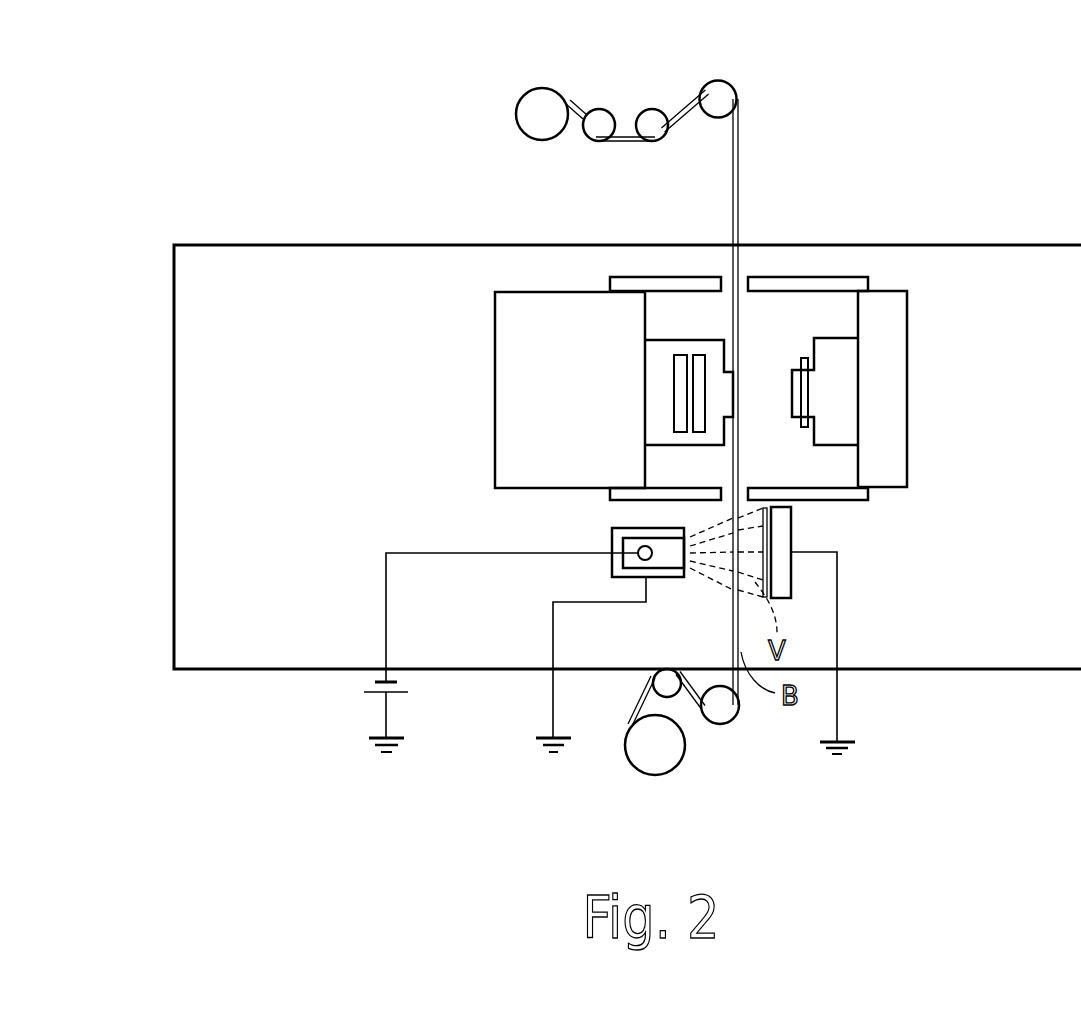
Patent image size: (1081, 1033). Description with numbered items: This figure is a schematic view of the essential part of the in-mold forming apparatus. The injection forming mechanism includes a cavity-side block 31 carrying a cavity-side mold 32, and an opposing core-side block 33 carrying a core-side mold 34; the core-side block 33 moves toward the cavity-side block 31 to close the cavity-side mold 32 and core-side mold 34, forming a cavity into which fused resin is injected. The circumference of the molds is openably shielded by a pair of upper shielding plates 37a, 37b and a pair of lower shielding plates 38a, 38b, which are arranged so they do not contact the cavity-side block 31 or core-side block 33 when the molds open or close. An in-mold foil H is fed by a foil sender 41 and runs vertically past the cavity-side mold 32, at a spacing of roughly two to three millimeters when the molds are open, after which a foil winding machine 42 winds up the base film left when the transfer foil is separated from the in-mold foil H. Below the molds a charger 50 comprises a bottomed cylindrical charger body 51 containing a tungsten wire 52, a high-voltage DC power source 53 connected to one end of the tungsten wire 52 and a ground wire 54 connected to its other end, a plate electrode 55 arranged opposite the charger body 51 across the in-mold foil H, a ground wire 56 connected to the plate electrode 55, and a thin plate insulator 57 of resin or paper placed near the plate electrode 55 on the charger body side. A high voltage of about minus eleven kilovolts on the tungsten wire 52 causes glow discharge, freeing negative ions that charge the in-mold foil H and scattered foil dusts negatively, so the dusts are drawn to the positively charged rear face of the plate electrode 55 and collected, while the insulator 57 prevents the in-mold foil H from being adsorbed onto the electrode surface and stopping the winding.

The cavity-side block 31 is at (495, 335).
The cavity-side mold 32 is at (662, 354).
The core-side block 33 is at (908, 327).
The core-side mold 34 is at (840, 397).
The upper shielding plate 37a is at (695, 277).
The upper shielding plate 37b is at (822, 277).
The lower shielding plate 38a is at (612, 500).
The lower shielding plate 38b is at (825, 500).
The foil sender 41 is at (540, 88).
The foil winding machine 42 is at (655, 776).
The charger 50 is at (620, 584).
The charger body 51 is at (618, 574).
The tungsten wire 52 is at (616, 548).
The high-voltage DC power source 53 is at (362, 684).
The ground wire 54 is at (553, 692).
The plate electrode 55 is at (792, 527).
The ground wire 56 is at (838, 620).
The thin plate insulator 57 is at (768, 568).
The in-mold foil H is at (742, 160).